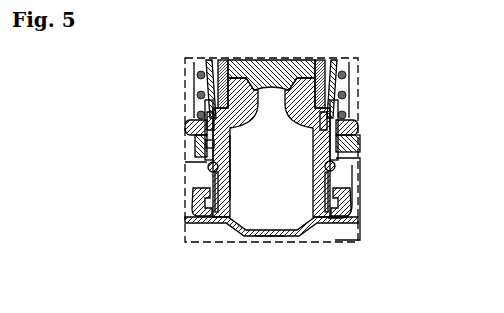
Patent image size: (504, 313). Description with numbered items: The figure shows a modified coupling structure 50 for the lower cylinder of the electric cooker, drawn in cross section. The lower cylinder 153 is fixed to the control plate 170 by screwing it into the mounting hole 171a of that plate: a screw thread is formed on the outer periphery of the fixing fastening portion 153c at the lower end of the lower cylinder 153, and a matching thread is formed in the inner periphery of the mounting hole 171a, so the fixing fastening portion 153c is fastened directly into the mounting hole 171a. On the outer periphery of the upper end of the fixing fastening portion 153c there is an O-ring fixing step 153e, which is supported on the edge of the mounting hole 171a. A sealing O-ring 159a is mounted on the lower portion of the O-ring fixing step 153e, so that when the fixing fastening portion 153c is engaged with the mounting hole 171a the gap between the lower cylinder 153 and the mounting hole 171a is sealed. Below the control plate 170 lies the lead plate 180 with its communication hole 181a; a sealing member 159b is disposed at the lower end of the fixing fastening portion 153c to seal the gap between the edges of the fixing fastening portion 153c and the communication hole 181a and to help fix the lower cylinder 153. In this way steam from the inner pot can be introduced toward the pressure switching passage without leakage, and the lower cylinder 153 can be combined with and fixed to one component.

The valve assembly 50 is at (158, 58).
The lower cylinder 153 is at (338, 153).
The fixing fastening portion 153c is at (213, 190).
The O-ring fixing step 153e is at (208, 162).
The sealing O-ring 159a is at (356, 177).
The sealing member 159b is at (354, 212).
The control plate 170 is at (189, 193).
The mounting hole 171a is at (202, 158).
The lead plate 180 is at (324, 238).
The communication hole 181a is at (267, 236).